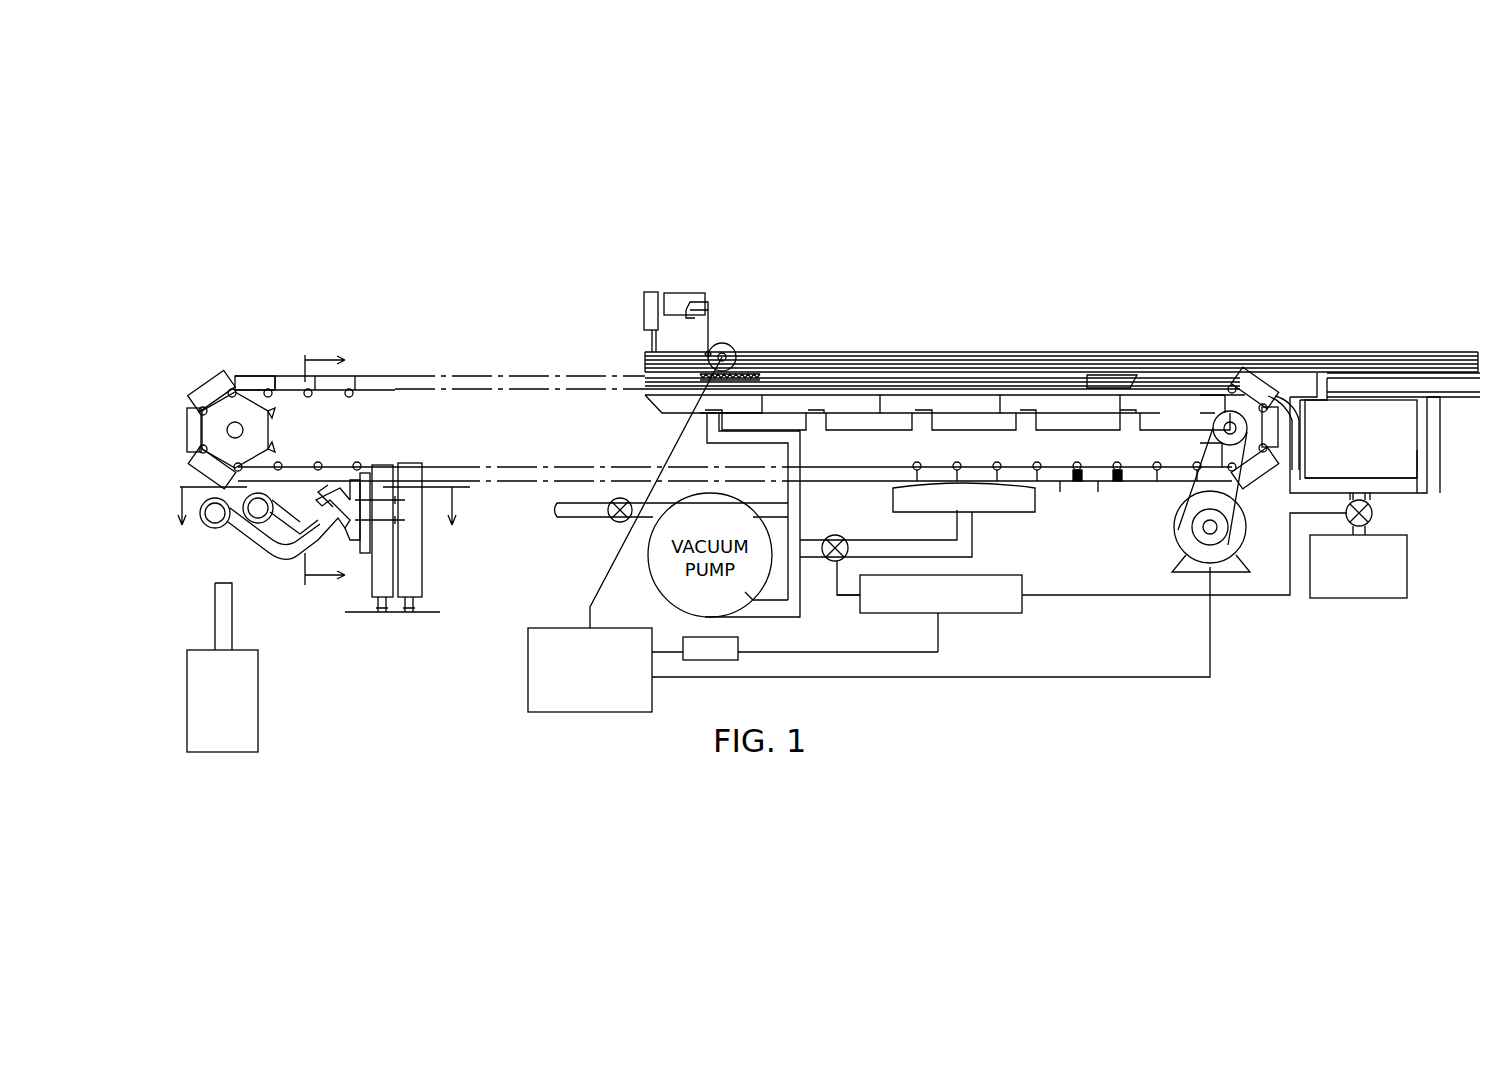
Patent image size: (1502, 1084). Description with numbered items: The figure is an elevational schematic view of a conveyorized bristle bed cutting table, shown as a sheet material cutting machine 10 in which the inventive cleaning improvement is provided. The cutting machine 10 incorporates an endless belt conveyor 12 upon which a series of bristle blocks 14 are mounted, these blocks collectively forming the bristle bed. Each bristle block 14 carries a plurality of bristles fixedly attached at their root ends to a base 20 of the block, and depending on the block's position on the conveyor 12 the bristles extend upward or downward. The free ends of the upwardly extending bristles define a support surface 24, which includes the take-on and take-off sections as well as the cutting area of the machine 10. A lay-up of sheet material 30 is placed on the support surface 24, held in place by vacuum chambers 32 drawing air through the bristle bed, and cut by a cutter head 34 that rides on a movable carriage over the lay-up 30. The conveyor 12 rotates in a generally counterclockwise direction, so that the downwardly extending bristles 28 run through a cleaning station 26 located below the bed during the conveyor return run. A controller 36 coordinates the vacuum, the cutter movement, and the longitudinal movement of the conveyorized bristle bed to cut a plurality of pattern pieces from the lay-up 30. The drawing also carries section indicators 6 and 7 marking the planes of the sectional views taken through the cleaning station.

The section line 6- 6 is at (312, 499).
The section line 7- 7 is at (315, 469).
The sheet material cutting machine 10 is at (432, 337).
The endless belt conveyor 12 is at (510, 373).
The bristle blocks 14 is at (285, 380).
The base 20 is at (265, 395).
The support surface 24 is at (350, 376).
The cleaning station 26 is at (257, 597).
The downwardly extending bristles 28 is at (1115, 478).
The lay-up of sheet material 30 is at (918, 352).
The vacuum chambers 32 is at (900, 420).
The cutter head 34 is at (648, 306).
The controller 36 is at (570, 627).